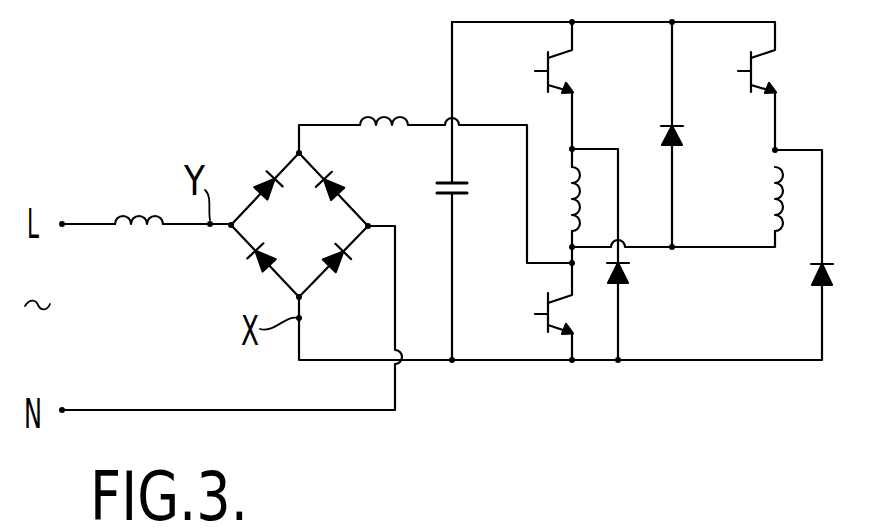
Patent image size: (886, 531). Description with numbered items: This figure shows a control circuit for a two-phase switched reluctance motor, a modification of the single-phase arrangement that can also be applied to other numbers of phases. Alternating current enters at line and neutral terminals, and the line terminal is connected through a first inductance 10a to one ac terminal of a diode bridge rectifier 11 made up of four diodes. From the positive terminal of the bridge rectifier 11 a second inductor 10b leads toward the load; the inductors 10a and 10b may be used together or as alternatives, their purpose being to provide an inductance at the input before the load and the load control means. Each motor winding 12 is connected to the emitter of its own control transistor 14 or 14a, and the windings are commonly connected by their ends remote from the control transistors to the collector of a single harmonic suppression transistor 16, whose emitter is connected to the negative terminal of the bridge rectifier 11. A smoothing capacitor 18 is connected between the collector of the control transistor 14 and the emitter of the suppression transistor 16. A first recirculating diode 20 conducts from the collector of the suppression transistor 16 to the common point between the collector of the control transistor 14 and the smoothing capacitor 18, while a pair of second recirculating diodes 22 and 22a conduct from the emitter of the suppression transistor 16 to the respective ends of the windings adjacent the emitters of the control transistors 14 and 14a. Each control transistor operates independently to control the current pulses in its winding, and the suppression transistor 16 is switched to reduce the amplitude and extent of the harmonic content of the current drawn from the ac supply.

The first inductance 10a is at (147, 216).
The second inductor 10b is at (378, 113).
The diode bridge rectifier 11 is at (310, 243).
The motor winding 12 is at (571, 200).
The control transistor 14 is at (560, 72).
The control transistor 14a is at (762, 72).
The harmonic suppression transistor 16 is at (560, 316).
The smoothing capacitor 18 is at (455, 196).
The first recirculating diode 20 is at (681, 142).
The second recirculating diode 22 is at (622, 275).
The second recirculating diode 22a is at (812, 273).